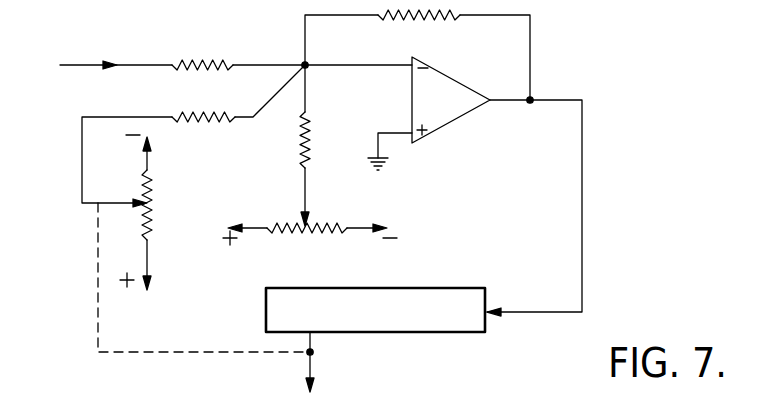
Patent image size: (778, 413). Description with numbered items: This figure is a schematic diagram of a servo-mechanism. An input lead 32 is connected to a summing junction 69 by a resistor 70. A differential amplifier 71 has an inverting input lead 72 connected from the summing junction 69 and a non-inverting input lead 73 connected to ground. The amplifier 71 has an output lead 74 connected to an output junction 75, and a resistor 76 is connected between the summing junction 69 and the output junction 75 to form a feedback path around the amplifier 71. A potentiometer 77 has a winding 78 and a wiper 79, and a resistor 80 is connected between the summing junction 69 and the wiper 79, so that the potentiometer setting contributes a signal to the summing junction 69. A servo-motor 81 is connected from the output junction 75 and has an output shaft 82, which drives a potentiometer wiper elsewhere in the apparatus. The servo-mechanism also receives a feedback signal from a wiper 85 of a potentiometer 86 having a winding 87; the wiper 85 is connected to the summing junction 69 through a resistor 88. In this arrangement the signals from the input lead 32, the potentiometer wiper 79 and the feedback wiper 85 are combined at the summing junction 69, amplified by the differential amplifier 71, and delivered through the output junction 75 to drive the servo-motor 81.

The lead 32 is at (132, 63).
The resistor 70 is at (202, 61).
The summing junction 69 is at (305, 63).
The inverting input lead 72 is at (380, 64).
The resistor 76 is at (442, 22).
The differential amplifier 71 is at (437, 136).
The non-inverting input lead 73 is at (390, 131).
The output lead 74 is at (503, 103).
The output junction 75 is at (532, 98).
The resistor 88 is at (197, 115).
The wiper 85 is at (110, 201).
The potentiometer 86 is at (170, 197).
The winding 87 is at (148, 243).
The resistor 80 is at (305, 140).
The wiper 79 is at (308, 193).
The potentiometer 77 is at (345, 212).
The winding 78 is at (333, 232).
The servo-motor 81 is at (415, 336).
The output shaft 82 is at (312, 357).